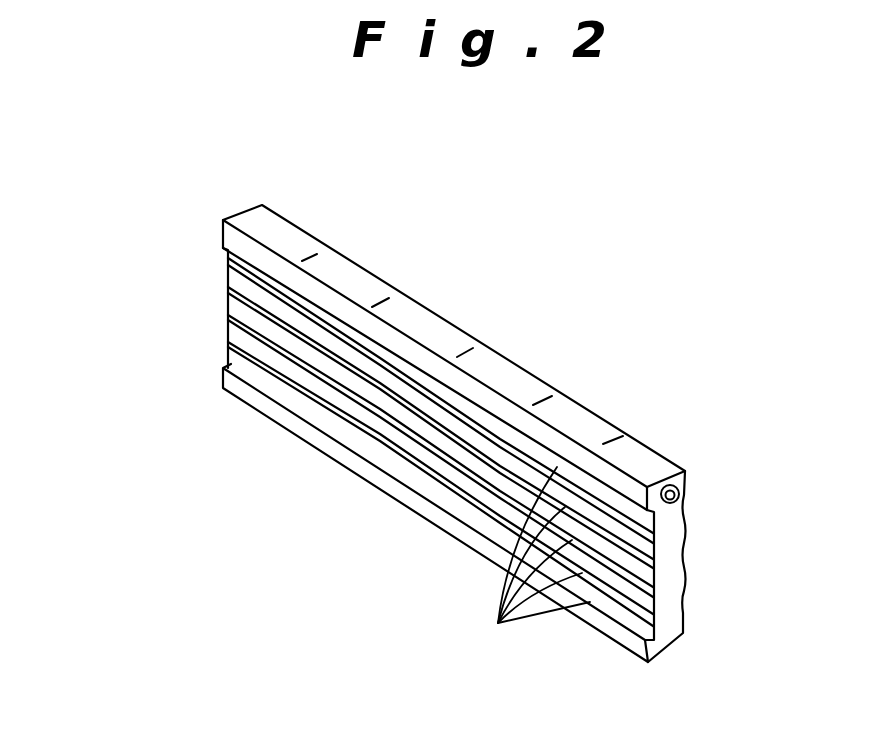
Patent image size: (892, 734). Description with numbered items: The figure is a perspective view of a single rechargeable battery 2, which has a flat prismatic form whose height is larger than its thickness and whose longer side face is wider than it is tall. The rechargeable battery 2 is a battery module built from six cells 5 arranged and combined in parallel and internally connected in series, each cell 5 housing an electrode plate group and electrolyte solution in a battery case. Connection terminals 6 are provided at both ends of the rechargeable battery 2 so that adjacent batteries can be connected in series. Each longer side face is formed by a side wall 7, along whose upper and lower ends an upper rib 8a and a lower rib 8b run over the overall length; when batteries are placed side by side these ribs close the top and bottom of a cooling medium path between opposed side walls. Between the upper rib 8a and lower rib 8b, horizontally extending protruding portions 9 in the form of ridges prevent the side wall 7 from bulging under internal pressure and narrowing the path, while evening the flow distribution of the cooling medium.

The rechargeable battery 2 is at (203, 220).
The cell 5 is at (327, 223).
The connection terminal 6 is at (680, 488).
The side wall 7 is at (238, 313).
The upper rib 8a is at (268, 257).
The lower rib 8b is at (253, 405).
The protruding portion 9 is at (525, 562).